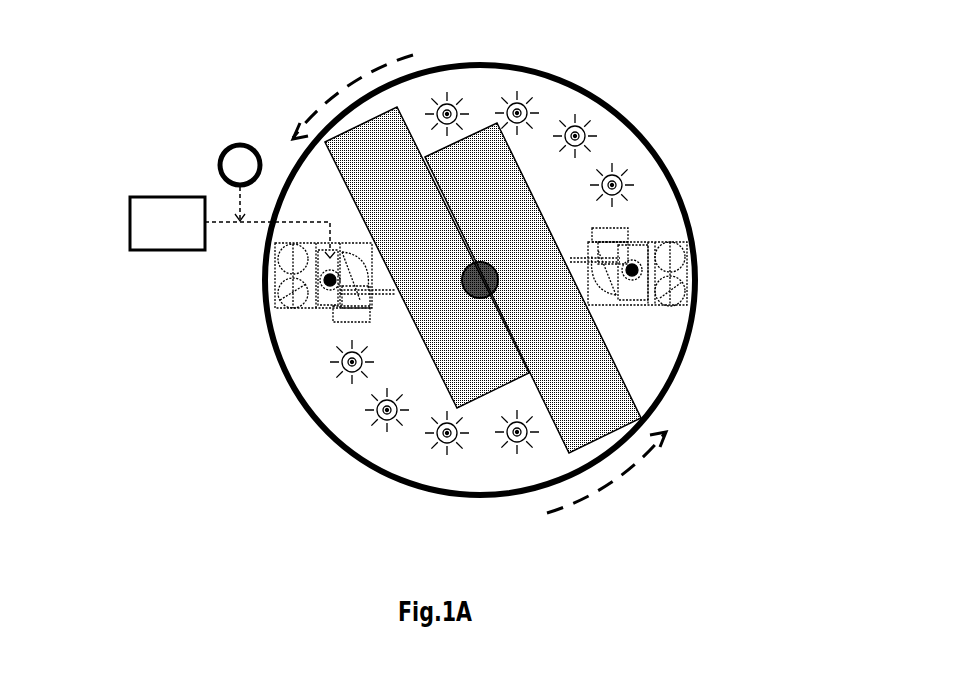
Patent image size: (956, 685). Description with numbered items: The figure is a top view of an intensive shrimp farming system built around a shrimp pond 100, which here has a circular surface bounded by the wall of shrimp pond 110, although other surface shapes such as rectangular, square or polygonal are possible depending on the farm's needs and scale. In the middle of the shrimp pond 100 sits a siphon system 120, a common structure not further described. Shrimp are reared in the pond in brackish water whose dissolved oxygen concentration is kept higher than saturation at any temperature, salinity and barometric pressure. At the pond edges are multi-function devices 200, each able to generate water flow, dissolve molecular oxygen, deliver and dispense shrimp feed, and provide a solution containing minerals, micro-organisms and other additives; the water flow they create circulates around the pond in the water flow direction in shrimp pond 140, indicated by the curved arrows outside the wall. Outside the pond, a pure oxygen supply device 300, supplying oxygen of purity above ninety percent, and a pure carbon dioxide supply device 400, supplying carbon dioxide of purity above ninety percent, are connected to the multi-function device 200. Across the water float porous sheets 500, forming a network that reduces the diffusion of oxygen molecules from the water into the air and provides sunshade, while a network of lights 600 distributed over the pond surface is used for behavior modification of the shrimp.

The shrimp pond 100 is at (200, 120).
The wall of shrimp pond 110 is at (381, 472).
The siphon system 120 is at (478, 262).
The water flow direction in shrimp pond 140 is at (340, 93).
The multi-function device 200 is at (297, 287).
The pure oxygen supply device 300 is at (145, 225).
The pure carbon dioxide supply device 400 is at (228, 160).
The porous sheets 500 is at (588, 372).
The lights 600 is at (625, 180).